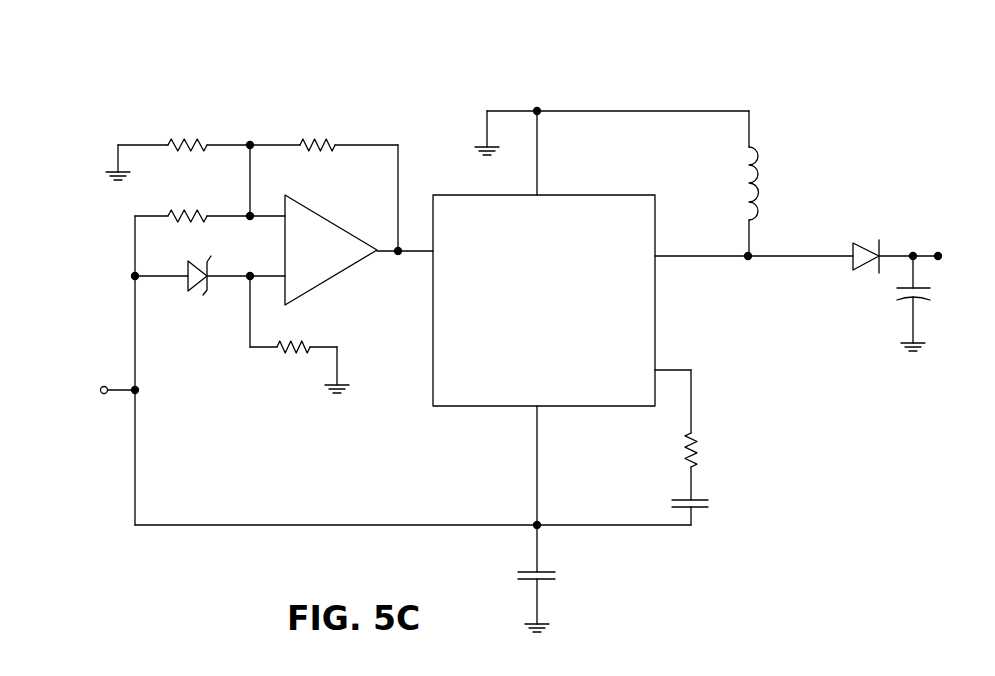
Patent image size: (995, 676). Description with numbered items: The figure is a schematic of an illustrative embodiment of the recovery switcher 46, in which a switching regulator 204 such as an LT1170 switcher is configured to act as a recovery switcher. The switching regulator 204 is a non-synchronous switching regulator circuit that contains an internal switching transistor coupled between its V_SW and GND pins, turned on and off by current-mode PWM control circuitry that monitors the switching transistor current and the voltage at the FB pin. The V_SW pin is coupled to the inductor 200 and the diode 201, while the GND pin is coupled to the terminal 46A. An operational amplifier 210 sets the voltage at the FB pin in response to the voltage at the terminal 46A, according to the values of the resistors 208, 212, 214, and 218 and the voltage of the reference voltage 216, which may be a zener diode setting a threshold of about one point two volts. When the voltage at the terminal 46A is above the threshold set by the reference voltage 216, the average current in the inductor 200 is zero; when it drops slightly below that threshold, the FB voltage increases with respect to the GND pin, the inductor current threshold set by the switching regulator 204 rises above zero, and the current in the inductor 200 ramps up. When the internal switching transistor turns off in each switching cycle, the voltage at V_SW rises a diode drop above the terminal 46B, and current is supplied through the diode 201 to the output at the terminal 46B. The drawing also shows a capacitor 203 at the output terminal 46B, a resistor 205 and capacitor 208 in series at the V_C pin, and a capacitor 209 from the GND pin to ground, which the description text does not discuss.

The recovery switcher 46 is at (678, 83).
The terminal 46A is at (112, 376).
The terminal 46B is at (936, 242).
The inductor 200 is at (762, 190).
The diode 201 is at (857, 238).
The output capacitor 203 is at (897, 300).
The switching regulator 204 is at (610, 195).
The compensation resistor 205 is at (684, 455).
The resistor 208 is at (320, 140).
The ground capacitor 209 is at (548, 568).
The operational amplifier 210 is at (313, 212).
The resistor 212 is at (188, 140).
The resistor 214 is at (187, 211).
The reference voltage 216 is at (187, 297).
The resistor 218 is at (305, 342).